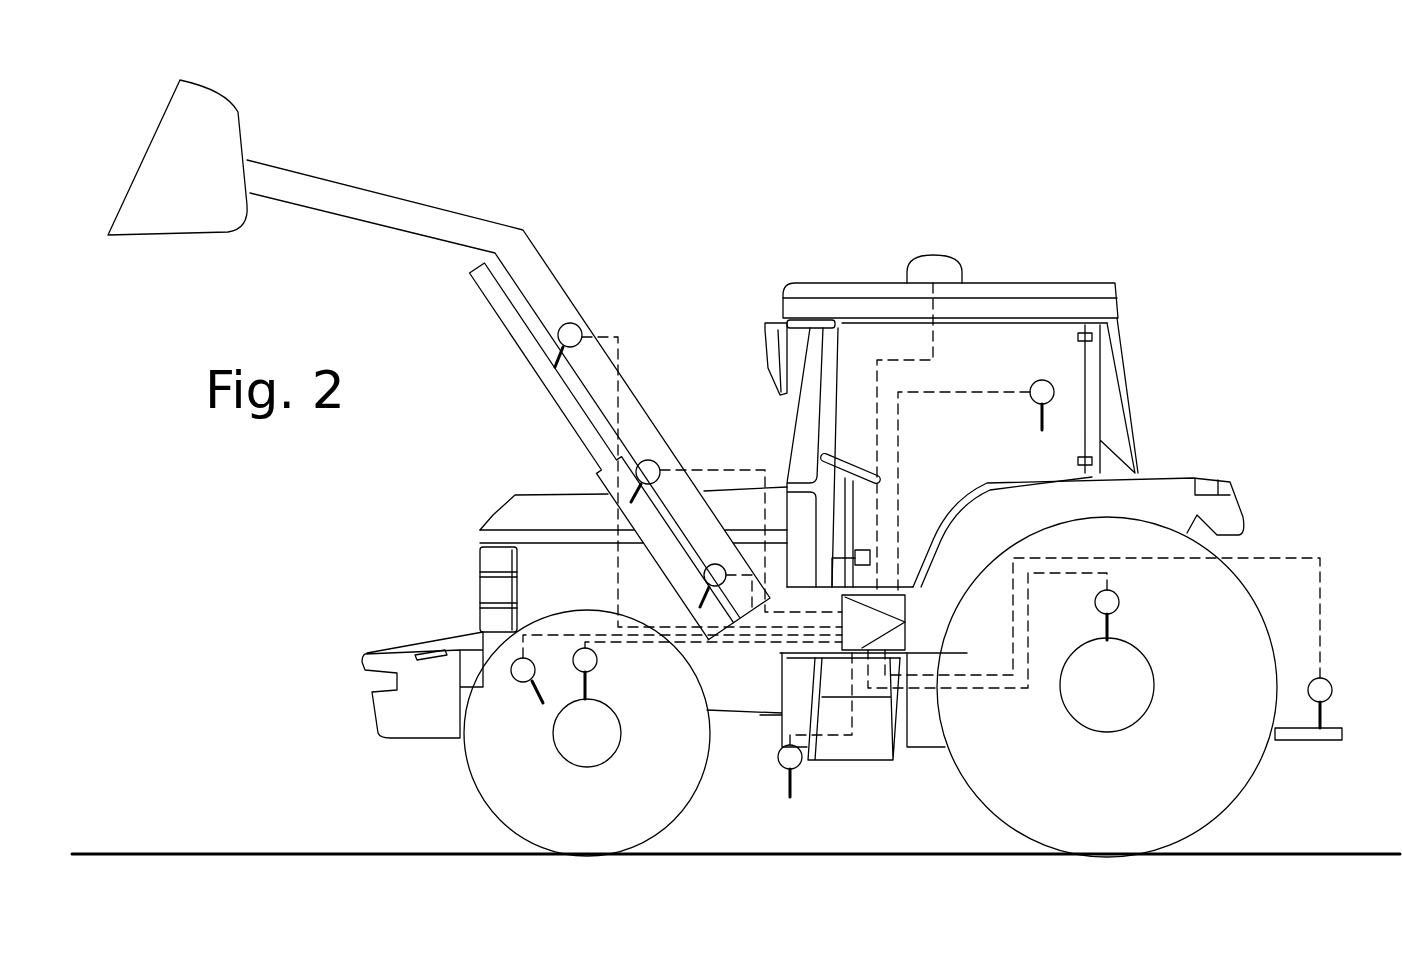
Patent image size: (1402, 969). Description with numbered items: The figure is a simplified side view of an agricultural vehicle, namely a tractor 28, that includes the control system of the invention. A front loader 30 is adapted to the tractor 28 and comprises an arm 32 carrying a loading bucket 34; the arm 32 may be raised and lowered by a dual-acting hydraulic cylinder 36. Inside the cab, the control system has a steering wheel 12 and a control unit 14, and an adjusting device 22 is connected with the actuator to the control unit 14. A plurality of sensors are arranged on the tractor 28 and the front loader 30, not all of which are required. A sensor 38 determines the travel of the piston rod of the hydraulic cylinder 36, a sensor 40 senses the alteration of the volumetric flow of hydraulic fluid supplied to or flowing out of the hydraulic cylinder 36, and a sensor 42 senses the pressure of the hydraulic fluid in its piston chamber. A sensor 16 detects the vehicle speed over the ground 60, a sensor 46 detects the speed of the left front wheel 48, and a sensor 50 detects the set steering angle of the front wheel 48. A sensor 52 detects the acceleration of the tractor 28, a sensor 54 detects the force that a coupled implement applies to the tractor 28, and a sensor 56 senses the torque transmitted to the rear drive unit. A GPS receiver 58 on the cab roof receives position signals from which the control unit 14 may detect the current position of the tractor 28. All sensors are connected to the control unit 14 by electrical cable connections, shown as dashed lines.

The steering wheel 12 is at (872, 476).
The control unit 14 is at (873, 622).
The sensor 16 is at (780, 761).
The adjusting device 22 is at (867, 550).
The tractor 28 is at (1048, 242).
The front loader 30 is at (462, 173).
The arm 32 is at (305, 190).
The loading bucket 34 is at (218, 176).
The dual-acting hydraulic cylinder 36 is at (605, 472).
The sensor 38 is at (580, 325).
The sensor 40 is at (655, 461).
The sensor 42 is at (713, 564).
The sensor 46 is at (597, 665).
The left front wheel 48 is at (497, 792).
The sensor 50 is at (509, 677).
The sensor 52 is at (1035, 379).
The sensor 54 is at (1331, 684).
The sensor 56 is at (1119, 598).
The GPS receiver 58 is at (953, 256).
The ground 60 is at (205, 853).